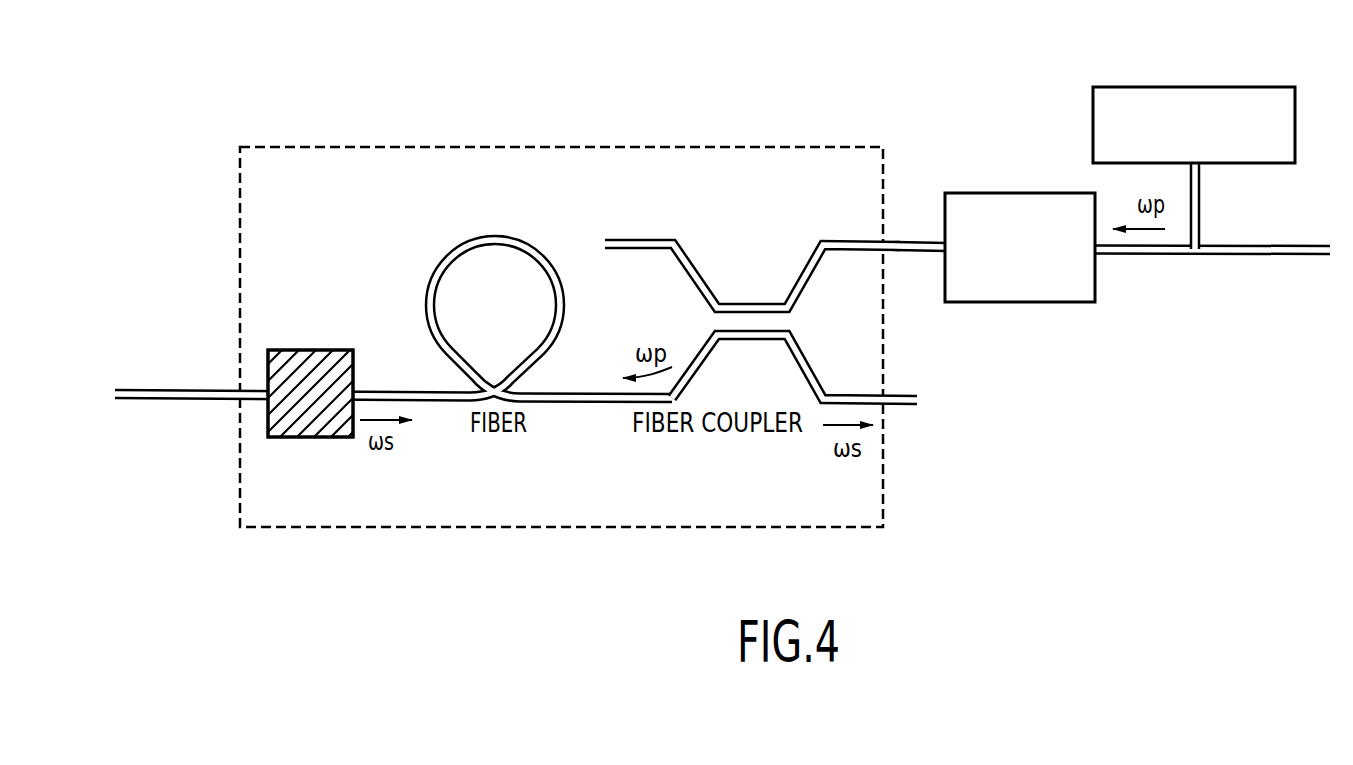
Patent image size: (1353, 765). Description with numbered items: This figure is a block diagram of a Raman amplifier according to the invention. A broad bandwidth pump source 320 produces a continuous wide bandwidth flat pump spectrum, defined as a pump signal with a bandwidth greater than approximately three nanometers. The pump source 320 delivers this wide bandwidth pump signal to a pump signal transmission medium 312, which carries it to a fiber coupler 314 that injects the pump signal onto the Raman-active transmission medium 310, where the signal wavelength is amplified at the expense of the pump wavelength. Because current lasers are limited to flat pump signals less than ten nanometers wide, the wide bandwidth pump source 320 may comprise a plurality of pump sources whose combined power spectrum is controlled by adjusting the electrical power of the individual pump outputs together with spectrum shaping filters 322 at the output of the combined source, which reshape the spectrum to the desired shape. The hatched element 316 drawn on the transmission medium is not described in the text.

The Raman-active transmission medium 310 is at (420, 395).
The pump signal transmission medium 312 is at (913, 240).
The fiber coupler 314 is at (753, 298).
The Raman gain medium / hatched element 316 is at (300, 437).
The broad bandwidth pump source 320 is at (1171, 86).
The spectrum shaping filters 322 is at (1025, 192).